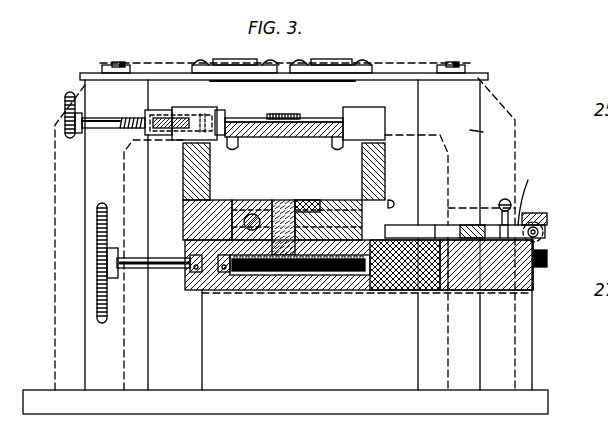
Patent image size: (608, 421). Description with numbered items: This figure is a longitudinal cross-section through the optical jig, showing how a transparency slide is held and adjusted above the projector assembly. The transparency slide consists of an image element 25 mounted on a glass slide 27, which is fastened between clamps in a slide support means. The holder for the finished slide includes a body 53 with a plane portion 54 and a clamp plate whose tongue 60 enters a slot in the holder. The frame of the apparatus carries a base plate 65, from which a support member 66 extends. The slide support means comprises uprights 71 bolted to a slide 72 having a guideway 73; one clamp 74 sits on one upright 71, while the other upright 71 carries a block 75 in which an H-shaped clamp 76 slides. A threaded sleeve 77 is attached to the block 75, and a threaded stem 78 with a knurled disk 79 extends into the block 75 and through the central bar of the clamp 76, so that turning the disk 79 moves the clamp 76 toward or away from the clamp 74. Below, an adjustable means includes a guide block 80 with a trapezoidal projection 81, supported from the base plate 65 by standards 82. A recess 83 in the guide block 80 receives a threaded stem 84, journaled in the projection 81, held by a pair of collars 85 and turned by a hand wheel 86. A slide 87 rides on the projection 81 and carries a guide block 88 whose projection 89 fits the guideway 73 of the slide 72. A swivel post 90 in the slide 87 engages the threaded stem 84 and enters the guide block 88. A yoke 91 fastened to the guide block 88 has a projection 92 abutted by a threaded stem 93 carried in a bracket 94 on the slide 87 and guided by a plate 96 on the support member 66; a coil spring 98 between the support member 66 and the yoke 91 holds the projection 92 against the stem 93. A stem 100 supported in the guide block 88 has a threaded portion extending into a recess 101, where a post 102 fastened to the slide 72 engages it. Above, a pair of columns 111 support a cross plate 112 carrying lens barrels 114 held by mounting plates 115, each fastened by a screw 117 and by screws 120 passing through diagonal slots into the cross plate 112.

The image element 25 is at (324, 120).
The glass slide 27 is at (262, 118).
The body 53 is at (300, 156).
The plane portion 54 is at (281, 138).
The tongue 60 is at (284, 114).
The base plate 65 is at (40, 390).
The support member 66 is at (505, 112).
The uprights 71 is at (183, 160).
The slide 72 is at (346, 198).
The guideway 73 is at (310, 200).
The clamp 74 is at (365, 108).
The block 75 is at (204, 110).
The H-shaped clamp 76 is at (230, 116).
The threaded sleeve 77 is at (158, 110).
The threaded stem 78 is at (80, 110).
The knurled disk 79 is at (64, 104).
The guide block 80 is at (372, 290).
The trapezoidal projection 81 is at (389, 290).
The standards 82 is at (212, 336).
The recess 83 is at (314, 290).
The threaded stem 84 is at (172, 258).
The collars 85 is at (200, 276).
The hand wheel 86 is at (97, 224).
The slide 87 is at (392, 224).
The guide block 88 is at (183, 216).
The projection 89 is at (238, 198).
The swivel post 90 is at (312, 196).
The yoke 91 is at (414, 224).
The projection 92 is at (545, 234).
The threaded stem 93 is at (540, 230).
The bracket 94 is at (534, 213).
The plate 96 is at (530, 180).
The coil spring 98 is at (505, 199).
The stem 100 is at (252, 214).
The recess 101 is at (283, 198).
The post 102 is at (258, 198).
The columns 111 is at (88, 176).
The cross plate 112 is at (488, 74).
The lens barrels 114 is at (314, 62).
The mounting plates 115 is at (193, 68).
The screw 117 is at (262, 62).
The screws 120 is at (372, 55).